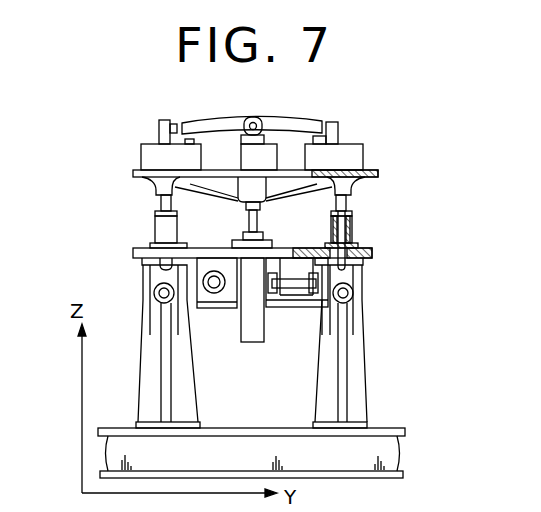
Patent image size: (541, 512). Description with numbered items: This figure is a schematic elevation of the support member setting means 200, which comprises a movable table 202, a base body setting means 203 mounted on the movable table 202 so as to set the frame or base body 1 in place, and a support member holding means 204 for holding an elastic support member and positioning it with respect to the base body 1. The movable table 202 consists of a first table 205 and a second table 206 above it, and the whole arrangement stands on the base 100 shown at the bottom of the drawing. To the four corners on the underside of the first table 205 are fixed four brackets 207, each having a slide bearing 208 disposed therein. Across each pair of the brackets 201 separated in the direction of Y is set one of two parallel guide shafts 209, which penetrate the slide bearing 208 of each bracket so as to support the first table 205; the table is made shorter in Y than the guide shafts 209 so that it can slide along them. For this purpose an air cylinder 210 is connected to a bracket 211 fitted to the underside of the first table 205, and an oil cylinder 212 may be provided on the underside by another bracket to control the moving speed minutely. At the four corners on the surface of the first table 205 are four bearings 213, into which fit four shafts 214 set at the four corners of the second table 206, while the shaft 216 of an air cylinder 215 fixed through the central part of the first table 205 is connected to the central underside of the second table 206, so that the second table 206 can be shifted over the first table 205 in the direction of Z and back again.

The base body 1 is at (208, 121).
The base beam 100 is at (404, 431).
The support member setting means 200 is at (110, 141).
The brackets 201 is at (181, 373).
The movable table 202 is at (441, 214).
The base body setting means 203 is at (332, 122).
The support member holding means 204 is at (165, 121).
The first table 205 is at (373, 254).
The second table 206 is at (380, 175).
The brackets 207 is at (149, 281).
The slide bearing 208 is at (164, 302).
The guide shafts 209 is at (153, 295).
The air cylinder 210 is at (292, 290).
The bracket 211 is at (312, 308).
The oil cylinder 212 is at (214, 290).
The bearings 213 is at (154, 232).
The shafts 214 is at (160, 205).
The air cylinder 215 is at (258, 349).
The shaft 216 is at (257, 220).